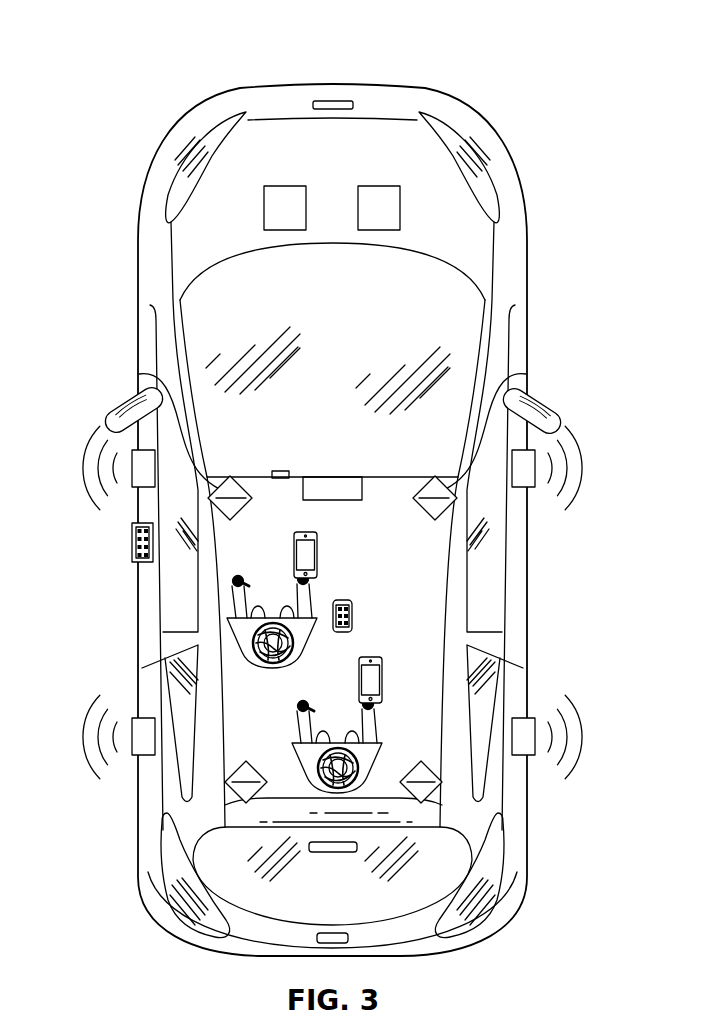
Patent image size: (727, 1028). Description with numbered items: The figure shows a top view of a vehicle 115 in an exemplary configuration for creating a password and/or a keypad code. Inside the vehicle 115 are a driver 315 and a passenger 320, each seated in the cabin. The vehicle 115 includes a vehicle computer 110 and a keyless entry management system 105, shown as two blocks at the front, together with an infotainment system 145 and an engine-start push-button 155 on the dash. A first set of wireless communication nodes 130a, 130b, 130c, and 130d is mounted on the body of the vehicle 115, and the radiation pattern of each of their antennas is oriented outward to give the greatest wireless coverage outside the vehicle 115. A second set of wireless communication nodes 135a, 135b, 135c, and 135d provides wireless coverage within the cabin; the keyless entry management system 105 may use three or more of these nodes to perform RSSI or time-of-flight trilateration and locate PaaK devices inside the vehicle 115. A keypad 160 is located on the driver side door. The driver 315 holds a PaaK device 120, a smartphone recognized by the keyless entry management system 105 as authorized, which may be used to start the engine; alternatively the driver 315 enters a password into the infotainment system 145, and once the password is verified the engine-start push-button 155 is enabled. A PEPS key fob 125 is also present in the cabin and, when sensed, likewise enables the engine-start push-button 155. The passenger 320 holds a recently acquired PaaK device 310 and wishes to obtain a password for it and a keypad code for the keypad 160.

The keyless entry management system 105 is at (286, 186).
The vehicle computer 110 is at (379, 186).
The vehicle 115 is at (333, 85).
The PaaK device 120 is at (318, 554).
The PEPS key fob 125 is at (353, 615).
The wireless communication node 130a is at (135, 490).
The wireless communication node 130b is at (137, 757).
The wireless communication node 130c is at (532, 490).
The wireless communication node 130d is at (530, 757).
The wireless communication node 135a is at (120, 402).
The wireless communication node 135b is at (545, 402).
The wireless communication node 135c is at (246, 782).
The wireless communication node 135d is at (419, 782).
The infotainment system 145 is at (333, 477).
The engine-start push-button 155 is at (280, 471).
The keypad 160 is at (130, 542).
The PaaK device 310 is at (383, 678).
The driver 315 is at (268, 667).
The passenger 320 is at (375, 773).